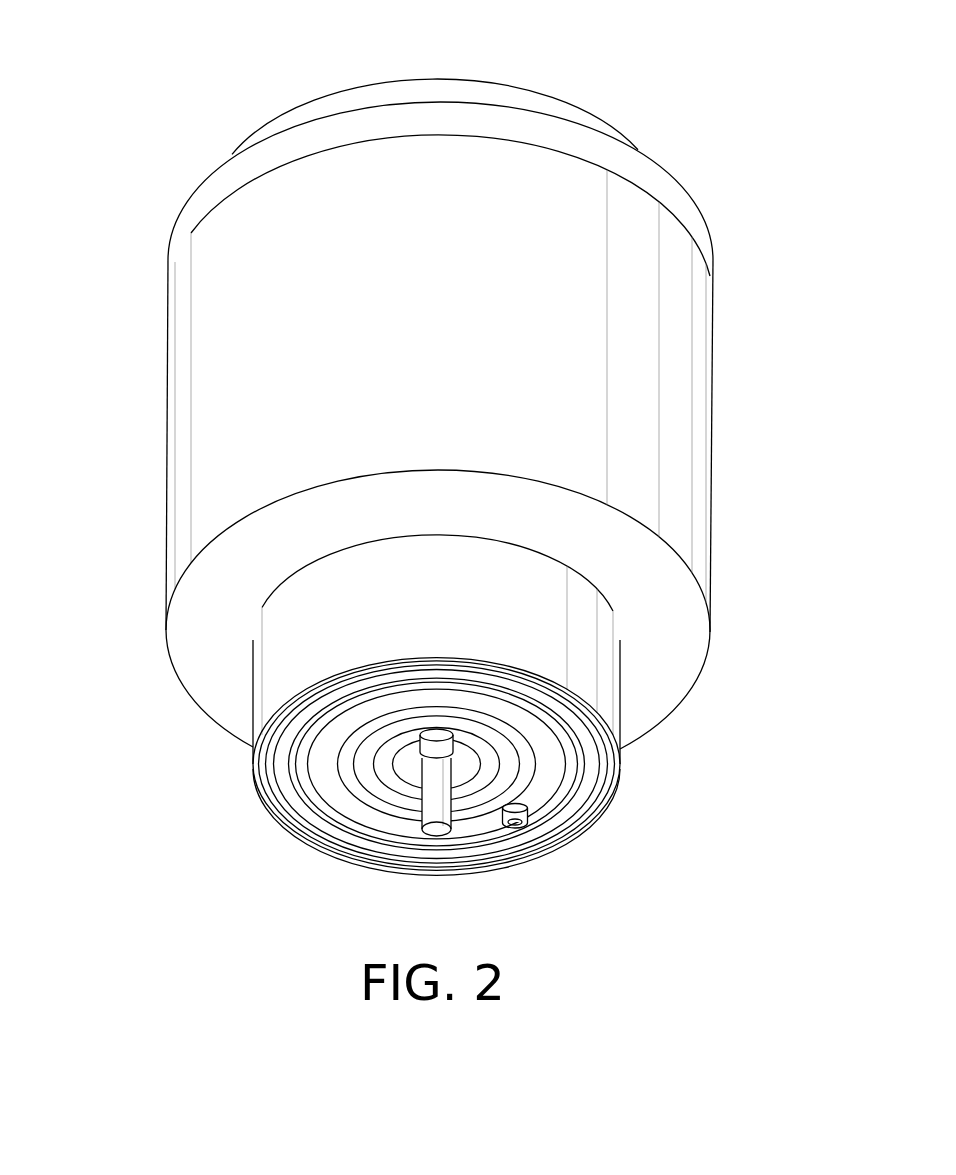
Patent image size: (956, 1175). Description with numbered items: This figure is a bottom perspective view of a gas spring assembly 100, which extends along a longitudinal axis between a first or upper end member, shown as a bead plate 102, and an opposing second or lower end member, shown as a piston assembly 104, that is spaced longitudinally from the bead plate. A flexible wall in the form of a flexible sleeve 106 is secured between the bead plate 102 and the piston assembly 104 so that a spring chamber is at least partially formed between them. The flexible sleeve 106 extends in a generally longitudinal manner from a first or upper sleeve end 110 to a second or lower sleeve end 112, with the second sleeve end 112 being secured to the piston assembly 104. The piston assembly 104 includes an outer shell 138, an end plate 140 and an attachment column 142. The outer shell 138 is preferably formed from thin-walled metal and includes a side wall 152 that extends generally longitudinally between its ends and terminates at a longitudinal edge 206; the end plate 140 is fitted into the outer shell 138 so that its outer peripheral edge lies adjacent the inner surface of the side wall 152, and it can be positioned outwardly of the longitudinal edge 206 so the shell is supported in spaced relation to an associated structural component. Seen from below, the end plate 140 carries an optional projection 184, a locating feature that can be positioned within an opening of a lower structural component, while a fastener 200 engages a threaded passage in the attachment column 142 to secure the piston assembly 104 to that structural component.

The gas spring assembly 100 is at (750, 145).
The bead plate 102 is at (522, 89).
The piston assembly 104 is at (652, 668).
The flexible sleeve 106 is at (713, 423).
The first sleeve end 110 is at (185, 185).
The second sleeve end 112 is at (183, 735).
The outer shell 138 is at (288, 635).
The end plate 140 is at (303, 783).
The attachment column 142 is at (397, 757).
The side wall 152 is at (622, 708).
The projection 184 is at (517, 830).
The fastener 200 is at (426, 822).
The longitudinal edge 206 is at (575, 837).